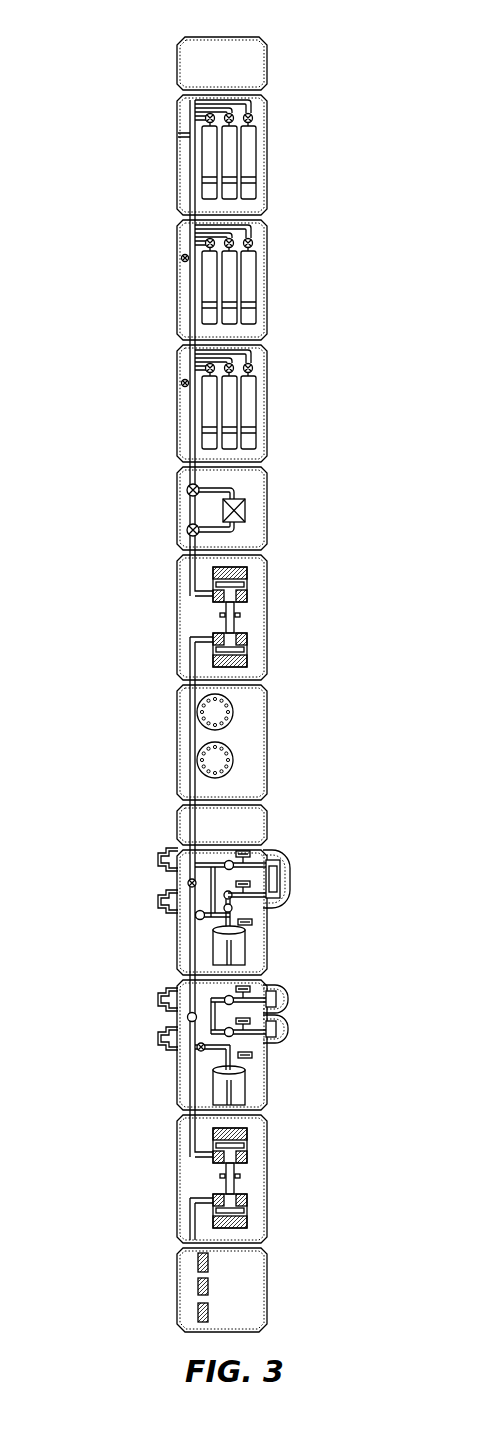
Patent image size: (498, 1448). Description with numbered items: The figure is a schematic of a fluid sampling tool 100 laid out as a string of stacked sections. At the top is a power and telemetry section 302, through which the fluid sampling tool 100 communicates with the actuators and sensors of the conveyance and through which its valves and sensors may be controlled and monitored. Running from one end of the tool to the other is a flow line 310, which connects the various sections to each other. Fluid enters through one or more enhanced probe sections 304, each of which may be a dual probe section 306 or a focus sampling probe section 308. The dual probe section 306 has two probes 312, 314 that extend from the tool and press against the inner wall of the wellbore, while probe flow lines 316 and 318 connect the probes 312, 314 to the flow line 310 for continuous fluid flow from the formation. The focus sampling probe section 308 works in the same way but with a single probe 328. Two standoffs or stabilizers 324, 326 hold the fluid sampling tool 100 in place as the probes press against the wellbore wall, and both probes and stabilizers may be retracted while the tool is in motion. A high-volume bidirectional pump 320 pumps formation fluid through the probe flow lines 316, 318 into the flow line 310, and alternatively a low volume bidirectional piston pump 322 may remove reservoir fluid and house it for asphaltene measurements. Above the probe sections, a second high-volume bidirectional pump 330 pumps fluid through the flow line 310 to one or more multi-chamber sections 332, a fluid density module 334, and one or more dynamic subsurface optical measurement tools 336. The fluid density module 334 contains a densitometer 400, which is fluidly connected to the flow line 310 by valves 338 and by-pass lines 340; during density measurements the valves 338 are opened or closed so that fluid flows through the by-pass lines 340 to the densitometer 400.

The fluid sampling tool 100 is at (115, 45).
The power and telemetry section 302 is at (268, 81).
The multi-chamber section 332 is at (268, 154).
The by-pass line 340 is at (233, 491).
The fluid density module 334 is at (268, 495).
The densitometer 400 is at (247, 510).
The valve 338 is at (187, 530).
The second high-volume bidirectional pump 330 is at (243, 618).
The dynamic subsurface optical measurement tool 336 is at (268, 762).
The single probe 328 is at (272, 850).
The focus sampling probe section 308 is at (309, 878).
The stabilizer 324 is at (160, 857).
The stabilizer 326 is at (160, 902).
The enhanced probe section 304 is at (178, 928).
The flow line 310 is at (191, 965).
The low volume bidirectional piston pump 322 is at (262, 945).
The probe flow line 316 is at (285, 988).
The probe 312 is at (283, 999).
The dual probe section 306 is at (309, 1023).
The probe 314 is at (284, 1036).
The probe flow line 318 is at (283, 1046).
The high-volume bidirectional pump 320 is at (242, 1187).